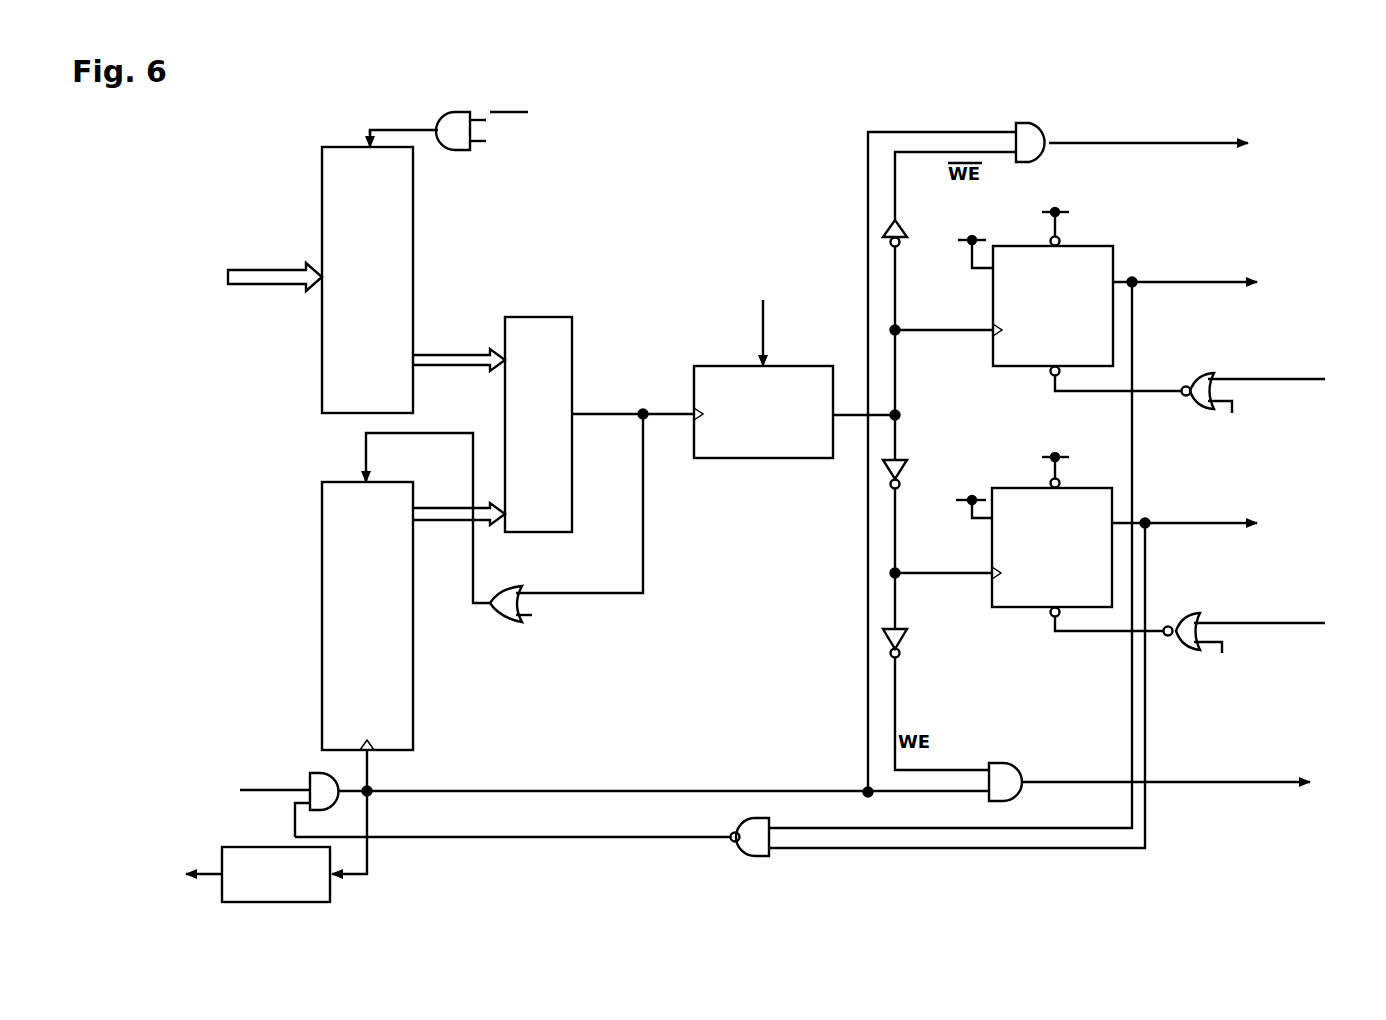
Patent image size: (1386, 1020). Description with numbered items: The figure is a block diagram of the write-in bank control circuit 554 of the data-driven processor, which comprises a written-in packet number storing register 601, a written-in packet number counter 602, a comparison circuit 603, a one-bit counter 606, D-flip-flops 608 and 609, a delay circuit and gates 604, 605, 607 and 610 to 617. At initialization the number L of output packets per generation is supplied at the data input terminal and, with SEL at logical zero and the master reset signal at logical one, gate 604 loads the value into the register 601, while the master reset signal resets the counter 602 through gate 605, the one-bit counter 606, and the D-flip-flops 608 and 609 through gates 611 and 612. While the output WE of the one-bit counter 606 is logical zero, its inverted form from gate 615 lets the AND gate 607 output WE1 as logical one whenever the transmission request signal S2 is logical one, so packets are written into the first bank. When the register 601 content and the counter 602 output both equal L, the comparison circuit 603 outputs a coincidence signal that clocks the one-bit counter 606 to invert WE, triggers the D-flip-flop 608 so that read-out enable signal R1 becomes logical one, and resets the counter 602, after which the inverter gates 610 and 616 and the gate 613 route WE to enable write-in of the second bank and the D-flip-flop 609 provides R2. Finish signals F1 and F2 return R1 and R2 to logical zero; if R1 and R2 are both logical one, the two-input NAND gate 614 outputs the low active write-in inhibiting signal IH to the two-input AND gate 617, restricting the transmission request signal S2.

The write-in bank control circuit 554 is at (242, 575).
The written-in packet number storing register 601 is at (413, 216).
The written-in packet number counter 602 is at (322, 482).
The comparison circuit 603 is at (558, 317).
The gate 604 is at (455, 112).
The gate 605 is at (500, 624).
The one-bit counter 606 is at (760, 458).
The AND gate 607 is at (1030, 124).
The D-flip-flop 608 is at (1082, 246).
The D-flip-flop 609 is at (1082, 488).
The gate 610 is at (905, 462).
The gate 611 is at (1196, 376).
The gate 612 is at (1180, 617).
The gate 613 is at (996, 763).
The two-input NAND gate 614 is at (770, 856).
The gate 615 is at (905, 232).
The gate 616 is at (905, 636).
The two-input AND gate 617 is at (312, 776).